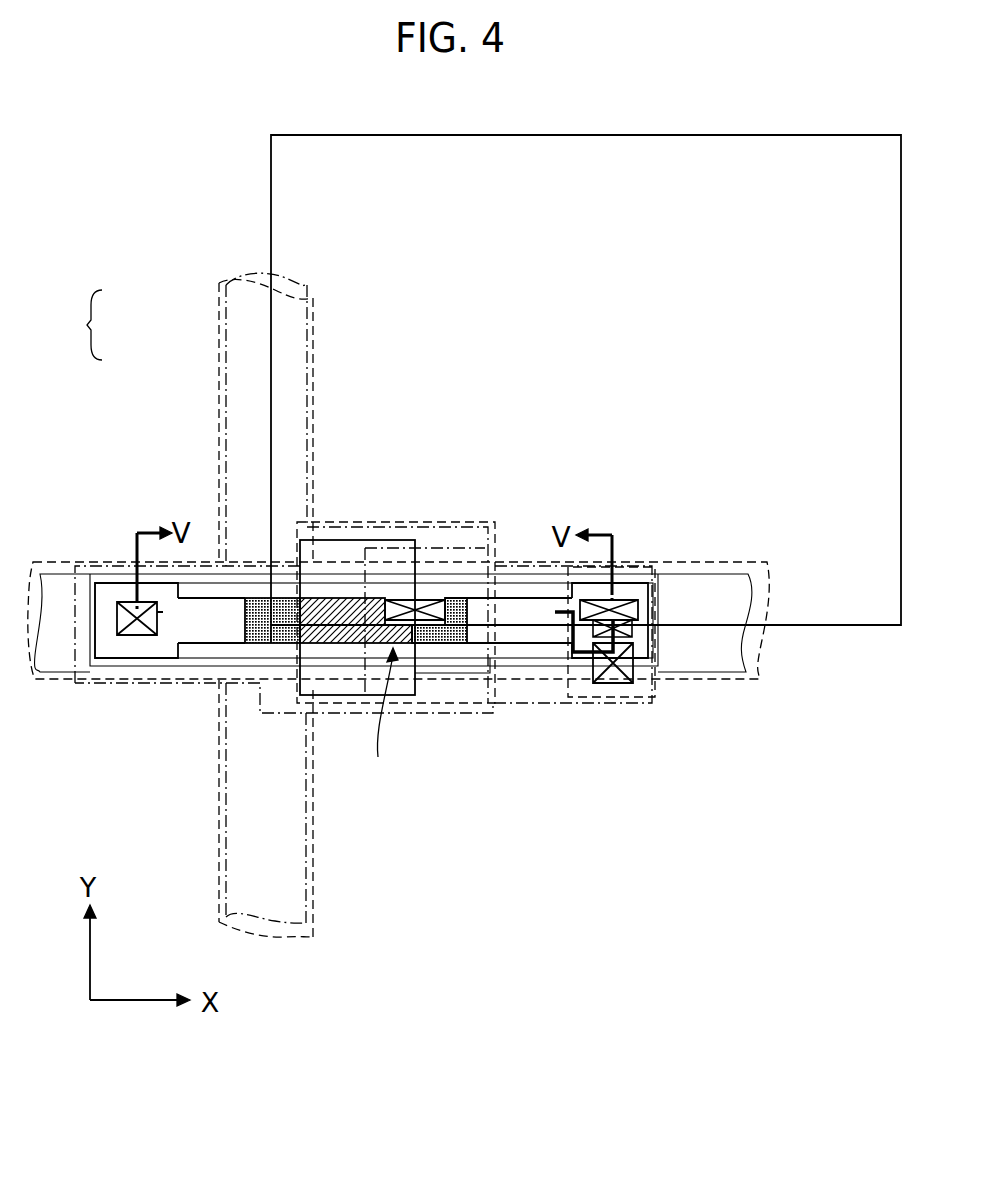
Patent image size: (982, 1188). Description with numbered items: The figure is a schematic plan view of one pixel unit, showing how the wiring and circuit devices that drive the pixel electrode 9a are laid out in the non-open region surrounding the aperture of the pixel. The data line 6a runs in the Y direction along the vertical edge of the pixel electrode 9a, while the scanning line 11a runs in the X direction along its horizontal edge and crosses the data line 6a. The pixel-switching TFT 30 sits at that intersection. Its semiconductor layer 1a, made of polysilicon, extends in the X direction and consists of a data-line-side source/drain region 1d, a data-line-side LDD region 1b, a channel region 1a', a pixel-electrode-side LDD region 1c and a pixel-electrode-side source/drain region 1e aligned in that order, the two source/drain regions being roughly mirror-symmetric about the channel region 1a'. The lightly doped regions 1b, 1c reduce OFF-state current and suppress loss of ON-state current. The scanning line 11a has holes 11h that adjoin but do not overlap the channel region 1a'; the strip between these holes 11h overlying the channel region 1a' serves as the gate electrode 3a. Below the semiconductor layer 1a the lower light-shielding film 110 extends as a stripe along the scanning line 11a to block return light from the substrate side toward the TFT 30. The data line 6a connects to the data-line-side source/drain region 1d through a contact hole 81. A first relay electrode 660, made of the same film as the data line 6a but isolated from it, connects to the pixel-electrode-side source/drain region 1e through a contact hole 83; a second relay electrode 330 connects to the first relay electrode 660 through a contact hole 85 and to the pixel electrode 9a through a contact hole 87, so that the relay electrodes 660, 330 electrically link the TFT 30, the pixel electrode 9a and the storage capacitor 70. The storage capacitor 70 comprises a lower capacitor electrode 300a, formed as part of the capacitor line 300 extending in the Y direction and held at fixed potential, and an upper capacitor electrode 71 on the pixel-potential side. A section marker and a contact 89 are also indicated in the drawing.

The pixel electrode 9a is at (657, 135).
The lower light-shielding film 110 is at (762, 665).
The scanning line 11a is at (60, 672).
The holes 11h is at (236, 586).
The first relay electrode 660 is at (452, 545).
The upper capacitor electrode 71 is at (215, 360).
The lower capacitor electrode 300a is at (217, 313).
The capacitor line 300 is at (219, 790).
The data line 6a is at (318, 366).
The storage capacitor 70 is at (82, 325).
The semiconductor layer 1a is at (130, 571).
The contact hole 81 is at (133, 630).
The data-line-side source/drain region 1d is at (202, 634).
The data-line-side LDD region 1b is at (251, 645).
The channel region 1a' is at (356, 685).
The pixel-electrode-side LDD region 1c is at (437, 645).
The contact 89 is at (417, 600).
The gate electrode 3a is at (344, 562).
The pixel-electrode-side source/drain region 1e is at (527, 640).
The contact hole 87 is at (622, 602).
The contact hole 83 is at (640, 630).
The contact hole 85 is at (638, 685).
The second relay electrode 330 is at (580, 700).
The TFT 30 is at (381, 715).